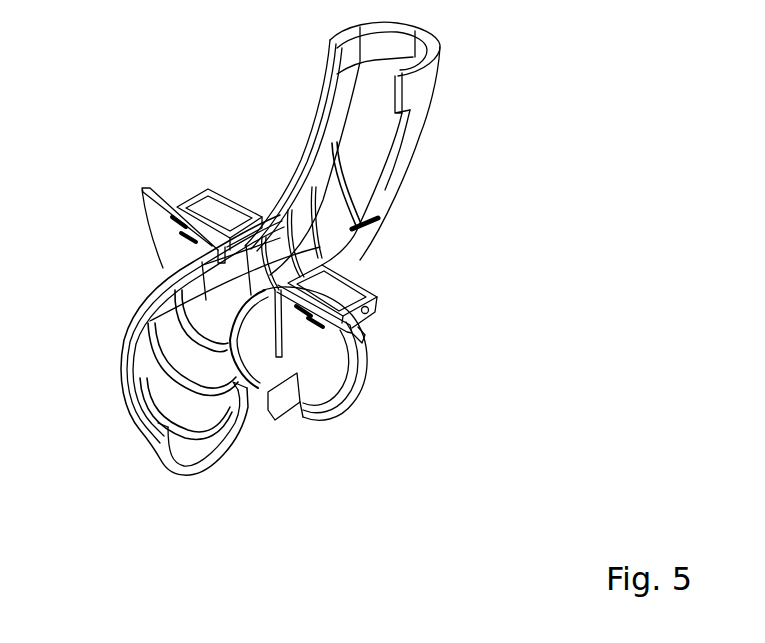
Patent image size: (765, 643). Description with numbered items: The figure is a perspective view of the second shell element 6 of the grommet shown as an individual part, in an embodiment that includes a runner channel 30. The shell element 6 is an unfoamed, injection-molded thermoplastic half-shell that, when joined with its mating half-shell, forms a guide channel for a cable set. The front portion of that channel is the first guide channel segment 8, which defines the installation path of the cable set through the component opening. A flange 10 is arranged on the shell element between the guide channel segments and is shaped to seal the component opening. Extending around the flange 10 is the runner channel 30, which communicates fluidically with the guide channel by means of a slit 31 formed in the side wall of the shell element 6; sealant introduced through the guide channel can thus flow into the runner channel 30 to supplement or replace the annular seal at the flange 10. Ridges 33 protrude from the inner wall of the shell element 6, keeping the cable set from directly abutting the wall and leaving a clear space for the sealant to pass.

The second shell element 6 is at (72, 115).
The first guide channel segment 8 is at (173, 204).
The flange 10 is at (330, 377).
The runner channel 30 is at (372, 147).
The slit 31 is at (207, 253).
The ridges 33 is at (147, 330).